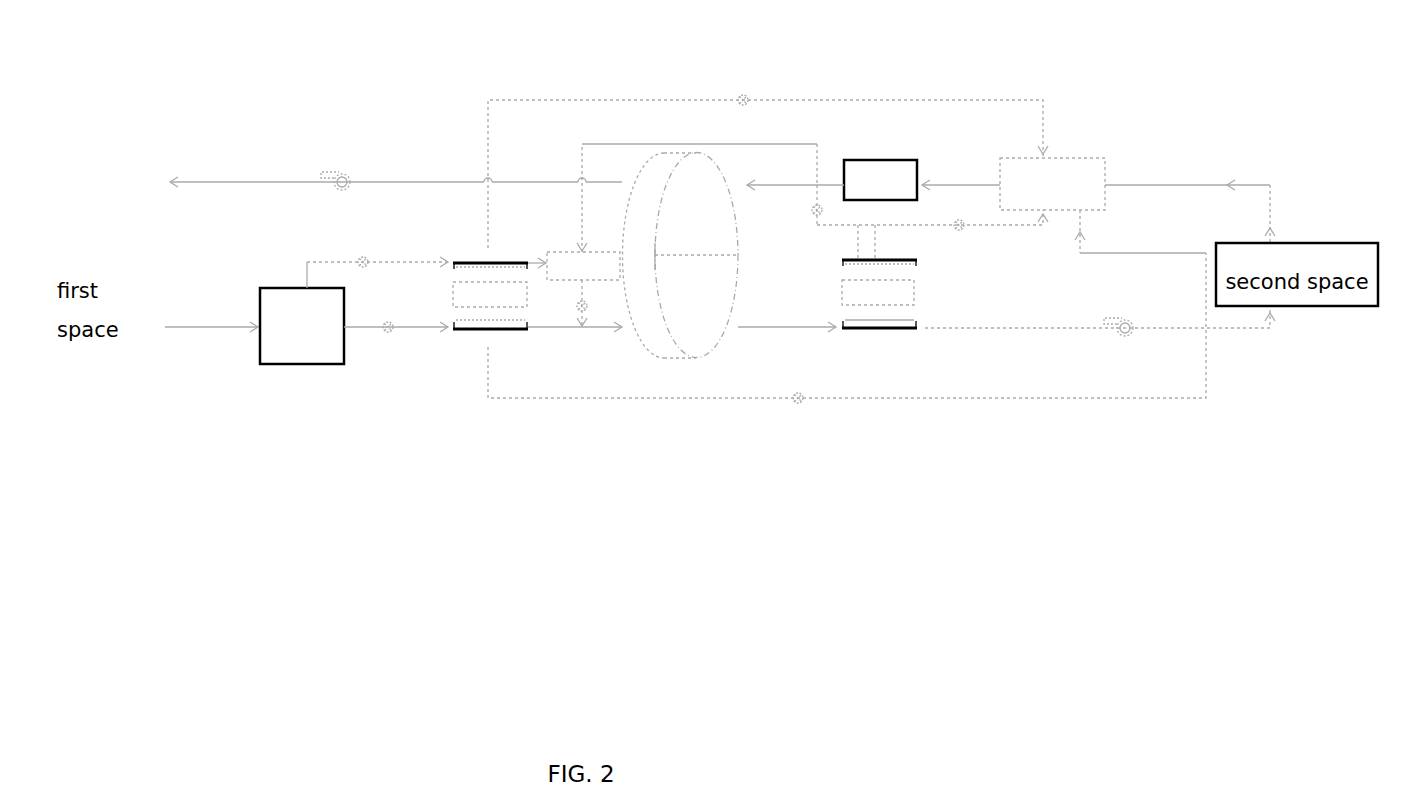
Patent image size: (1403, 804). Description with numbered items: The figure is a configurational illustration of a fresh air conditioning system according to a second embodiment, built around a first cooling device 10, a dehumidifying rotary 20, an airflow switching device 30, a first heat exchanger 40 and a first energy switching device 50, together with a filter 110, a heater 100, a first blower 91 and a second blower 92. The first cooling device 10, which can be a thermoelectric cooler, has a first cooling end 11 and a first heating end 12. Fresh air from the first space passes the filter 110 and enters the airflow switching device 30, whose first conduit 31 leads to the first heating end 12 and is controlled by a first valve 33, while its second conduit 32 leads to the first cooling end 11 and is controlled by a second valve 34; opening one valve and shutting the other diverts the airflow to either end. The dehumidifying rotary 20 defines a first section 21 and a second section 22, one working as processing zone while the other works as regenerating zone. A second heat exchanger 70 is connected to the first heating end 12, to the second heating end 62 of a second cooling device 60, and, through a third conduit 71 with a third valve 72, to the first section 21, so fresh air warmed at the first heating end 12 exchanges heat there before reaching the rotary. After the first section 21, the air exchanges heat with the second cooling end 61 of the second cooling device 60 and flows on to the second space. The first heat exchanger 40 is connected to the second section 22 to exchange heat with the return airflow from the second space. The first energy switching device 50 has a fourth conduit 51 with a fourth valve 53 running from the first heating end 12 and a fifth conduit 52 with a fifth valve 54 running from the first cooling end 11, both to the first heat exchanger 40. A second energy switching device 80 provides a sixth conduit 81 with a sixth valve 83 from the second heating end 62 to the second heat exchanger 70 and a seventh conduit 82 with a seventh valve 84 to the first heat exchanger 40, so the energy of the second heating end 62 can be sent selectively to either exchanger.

The first cooling device 10 is at (474, 302).
The first cooling end 11 is at (486, 328).
The first heating end 12 is at (456, 257).
The dehumidifying rotary 20 is at (648, 301).
The first section 21 is at (710, 315).
The second section 22 is at (710, 185).
The airflow switching device 30 is at (362, 301).
The first conduit 31 is at (313, 262).
The second conduit 32 is at (368, 332).
The first valve 33 is at (358, 260).
The second valve 34 is at (388, 333).
The first heat exchanger 40 is at (1107, 168).
The first energy switching device 50 is at (1107, 252).
The fourth conduit 51 is at (611, 97).
The fifth conduit 52 is at (912, 398).
The fourth valve 53 is at (745, 95).
The fifth valve 54 is at (803, 408).
The second cooling device 60 is at (834, 293).
The second cooling end 61 is at (893, 329).
The second heating end 62 is at (834, 258).
The second heat exchanger 70 is at (575, 272).
The third conduit 71 is at (580, 292).
The third valve 72 is at (586, 310).
The second energy switching device 80 is at (865, 242).
The sixth conduit 81 is at (648, 146).
The seventh conduit 82 is at (912, 225).
The sixth valve 83 is at (812, 213).
The seventh valve 84 is at (963, 230).
The first blower 91 is at (1125, 330).
The second blower 92 is at (335, 168).
The heater 100 is at (905, 160).
The filter 110 is at (260, 363).